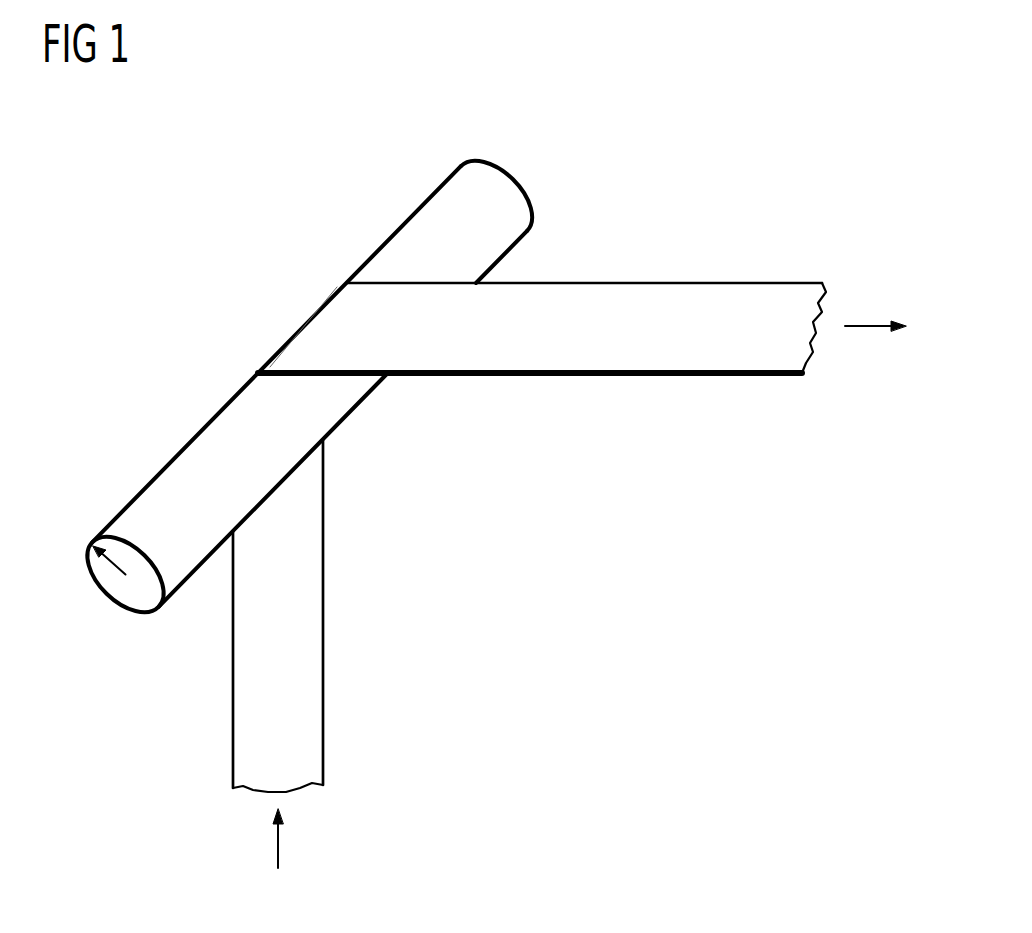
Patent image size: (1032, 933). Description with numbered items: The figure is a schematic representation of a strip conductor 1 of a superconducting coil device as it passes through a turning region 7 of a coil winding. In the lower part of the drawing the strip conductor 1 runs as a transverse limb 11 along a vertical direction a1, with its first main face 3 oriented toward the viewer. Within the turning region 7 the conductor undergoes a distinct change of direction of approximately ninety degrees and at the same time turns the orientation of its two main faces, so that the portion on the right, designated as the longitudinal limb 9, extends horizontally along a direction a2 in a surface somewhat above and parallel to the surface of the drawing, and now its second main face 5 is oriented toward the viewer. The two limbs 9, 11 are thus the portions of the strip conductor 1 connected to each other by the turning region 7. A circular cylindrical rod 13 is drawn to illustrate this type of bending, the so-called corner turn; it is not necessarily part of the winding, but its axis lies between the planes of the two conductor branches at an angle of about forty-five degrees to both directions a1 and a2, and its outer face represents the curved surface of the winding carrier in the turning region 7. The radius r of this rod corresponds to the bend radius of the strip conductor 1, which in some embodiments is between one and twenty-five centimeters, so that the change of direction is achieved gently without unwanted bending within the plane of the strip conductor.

The strip conductor 1 is at (593, 129).
The first main face 3 is at (309, 680).
The second main face 5 is at (623, 301).
The turning region 7 is at (212, 297).
The longitudinal limb 9 is at (733, 282).
The transverse limb 11 is at (323, 596).
The rod 13 is at (425, 220).
The bend radius r is at (114, 566).
The direction a1 is at (278, 842).
The direction a2 is at (866, 326).